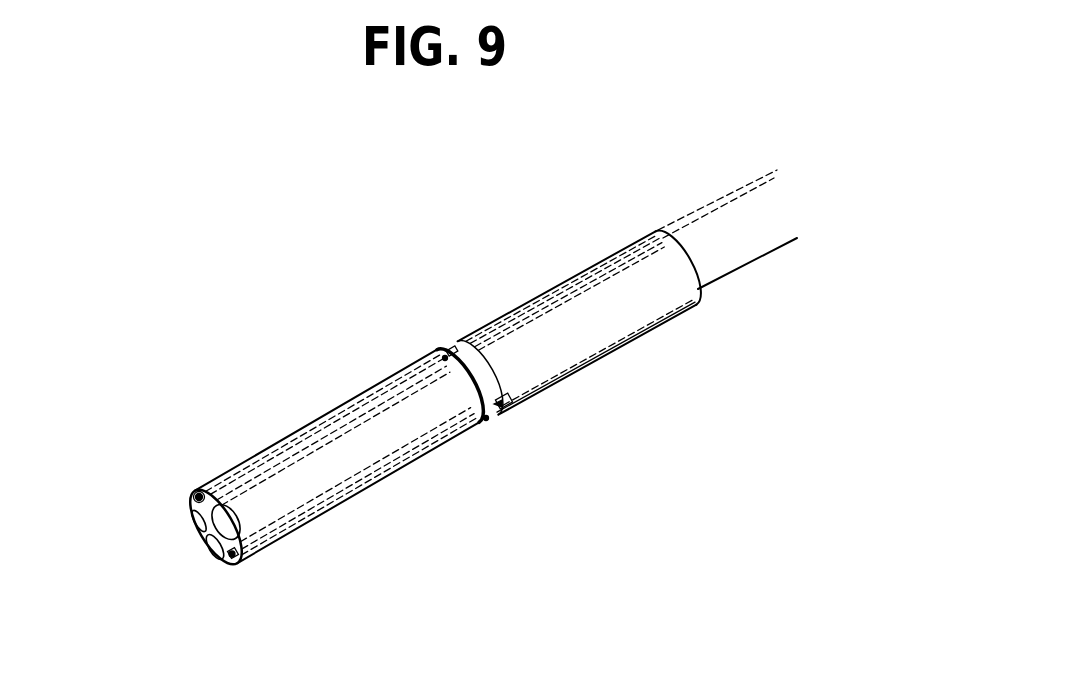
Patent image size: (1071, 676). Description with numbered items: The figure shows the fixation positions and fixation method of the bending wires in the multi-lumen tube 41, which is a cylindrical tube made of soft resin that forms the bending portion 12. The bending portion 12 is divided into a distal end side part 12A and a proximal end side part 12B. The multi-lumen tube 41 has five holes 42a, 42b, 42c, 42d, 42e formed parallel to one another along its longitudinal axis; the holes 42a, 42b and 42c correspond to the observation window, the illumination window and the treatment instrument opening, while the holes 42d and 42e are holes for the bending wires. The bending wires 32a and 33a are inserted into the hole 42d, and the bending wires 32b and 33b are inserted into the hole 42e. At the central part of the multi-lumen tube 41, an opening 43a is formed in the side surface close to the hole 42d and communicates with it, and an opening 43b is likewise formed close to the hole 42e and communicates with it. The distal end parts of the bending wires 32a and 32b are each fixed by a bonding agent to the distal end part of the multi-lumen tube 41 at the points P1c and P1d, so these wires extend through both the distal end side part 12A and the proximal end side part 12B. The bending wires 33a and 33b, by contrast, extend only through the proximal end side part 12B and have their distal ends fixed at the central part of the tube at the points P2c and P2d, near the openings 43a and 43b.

The bending portion 12 is at (593, 132).
The distal end side part 12A is at (408, 292).
The proximal end side part 12B is at (620, 175).
The bending wire 32a is at (387, 485).
The bending wire 32b is at (348, 415).
The bending wire 33a is at (568, 385).
The bending wire 33b is at (533, 303).
The multi-lumen tube 41 is at (640, 337).
The hole 42a is at (190, 518).
The hole 42b is at (211, 554).
The hole 42c is at (207, 532).
The hole 42d is at (229, 563).
The hole 42e is at (190, 495).
The opening 43a is at (515, 410).
The opening 43b is at (449, 338).
The point P1c is at (239, 560).
The point P1d is at (199, 491).
The point P2c is at (486, 418).
The point P2d is at (441, 355).